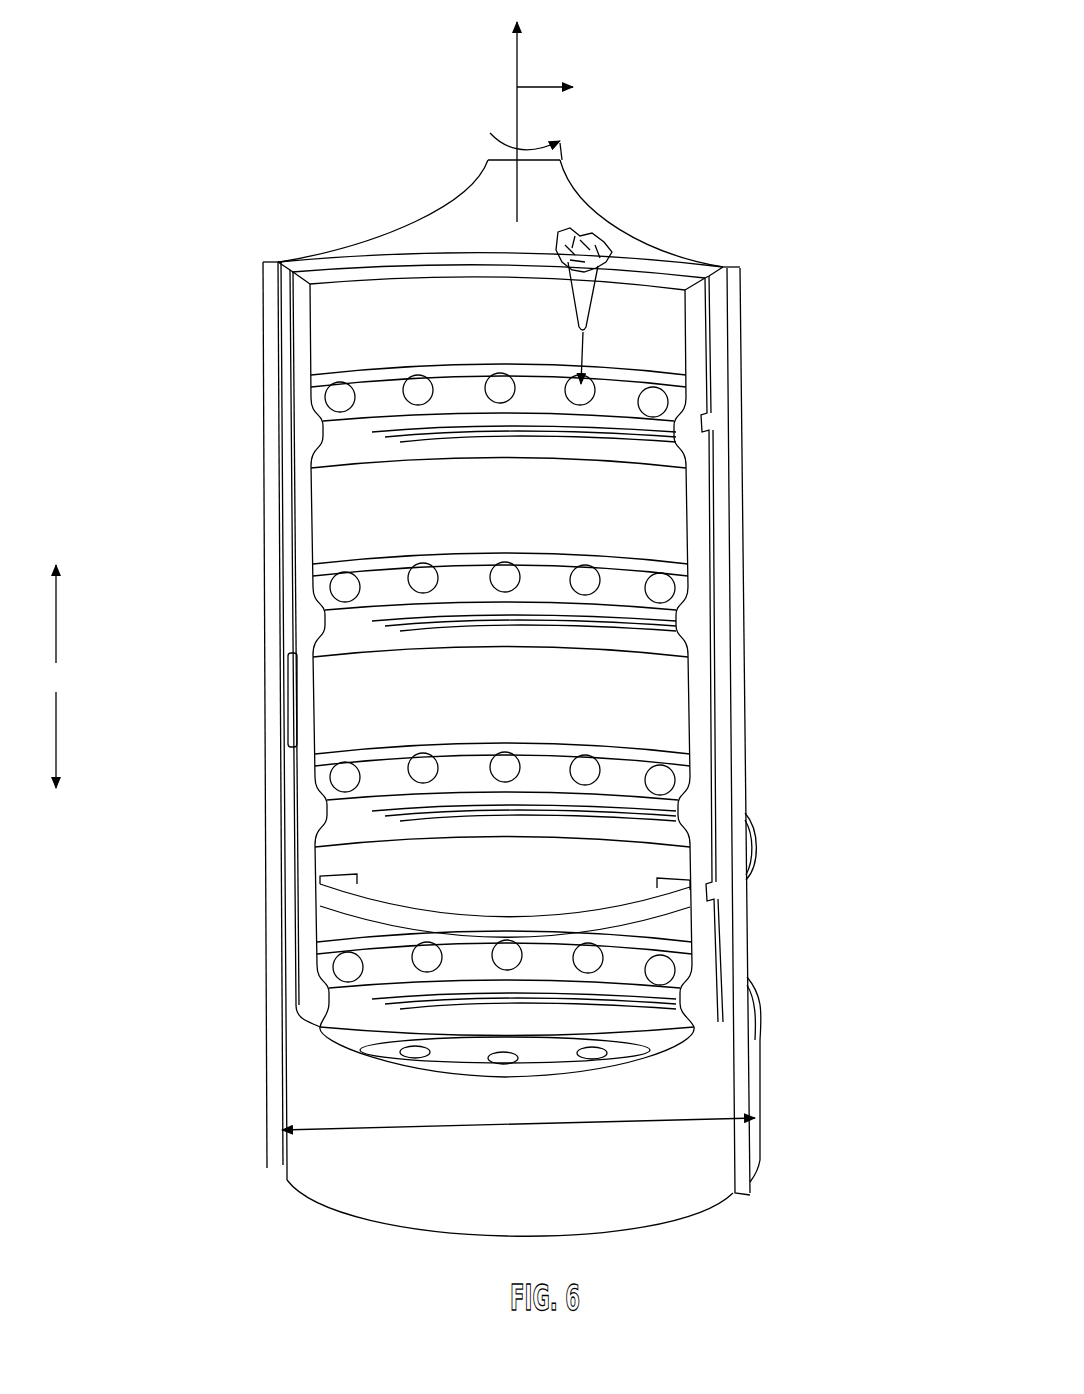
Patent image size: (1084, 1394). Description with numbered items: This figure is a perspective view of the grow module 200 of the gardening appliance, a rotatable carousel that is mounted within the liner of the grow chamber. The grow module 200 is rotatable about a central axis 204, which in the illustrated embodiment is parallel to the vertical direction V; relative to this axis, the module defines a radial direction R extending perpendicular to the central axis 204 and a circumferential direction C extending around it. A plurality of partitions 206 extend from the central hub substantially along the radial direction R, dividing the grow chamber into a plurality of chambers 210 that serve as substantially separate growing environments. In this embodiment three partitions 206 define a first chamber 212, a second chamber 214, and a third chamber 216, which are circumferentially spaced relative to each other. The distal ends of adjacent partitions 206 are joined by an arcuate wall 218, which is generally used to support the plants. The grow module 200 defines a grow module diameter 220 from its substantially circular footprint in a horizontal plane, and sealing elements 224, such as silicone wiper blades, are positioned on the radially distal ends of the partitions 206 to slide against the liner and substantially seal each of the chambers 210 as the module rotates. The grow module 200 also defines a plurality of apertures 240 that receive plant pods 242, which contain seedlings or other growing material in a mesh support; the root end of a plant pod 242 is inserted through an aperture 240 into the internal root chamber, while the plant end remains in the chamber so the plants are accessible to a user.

The grow module 200 is at (877, 125).
The central axis 204 is at (516, 63).
The partitions 206 is at (330, 258).
The chambers 210 is at (563, 677).
The first chamber 212 is at (657, 210).
The second chamber 214 is at (397, 212).
The third chamber 216 is at (398, 489).
The arcuate wall 218 is at (662, 522).
The grow module diameter 220 is at (620, 1124).
The sealing elements 224 is at (560, 142).
The apertures 240 is at (326, 411).
The plant pods 242 is at (585, 292).
The radial direction R is at (543, 86).
The circumferential direction C is at (558, 165).
The vertical direction V is at (57, 676).